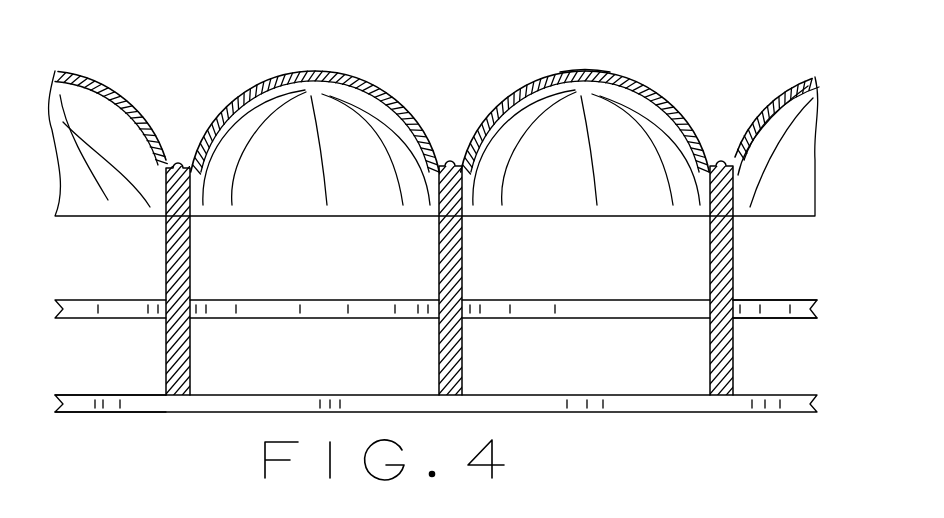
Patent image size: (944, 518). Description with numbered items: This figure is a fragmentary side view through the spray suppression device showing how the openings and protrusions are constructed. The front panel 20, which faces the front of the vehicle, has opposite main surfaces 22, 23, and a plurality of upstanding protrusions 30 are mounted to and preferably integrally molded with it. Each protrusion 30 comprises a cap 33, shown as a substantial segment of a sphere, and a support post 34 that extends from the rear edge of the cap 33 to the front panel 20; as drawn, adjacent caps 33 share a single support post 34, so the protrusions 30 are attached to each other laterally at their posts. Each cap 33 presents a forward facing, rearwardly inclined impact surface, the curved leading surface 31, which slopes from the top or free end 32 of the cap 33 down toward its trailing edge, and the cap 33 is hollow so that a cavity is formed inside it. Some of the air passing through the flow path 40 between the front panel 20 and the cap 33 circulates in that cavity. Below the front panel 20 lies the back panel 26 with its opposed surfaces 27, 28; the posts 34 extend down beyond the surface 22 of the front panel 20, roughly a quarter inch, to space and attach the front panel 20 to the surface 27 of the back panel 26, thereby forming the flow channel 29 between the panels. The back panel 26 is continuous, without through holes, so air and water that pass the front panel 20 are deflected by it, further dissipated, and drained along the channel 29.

The front panel 20 is at (820, 307).
The main surface of front panel 22 is at (788, 318).
The main surface of front panel 23 is at (783, 298).
The back panel 26 is at (820, 400).
The main surface of back panel 27 is at (82, 393).
The main surface of back panel 28 is at (88, 413).
The flow path 29 is at (543, 373).
The protrusion 30 is at (633, 125).
The curved leading surface 31 is at (223, 103).
The free end 32 is at (583, 70).
The cap 33 is at (490, 103).
The support post 34 is at (733, 235).
The flow path 40 is at (567, 272).